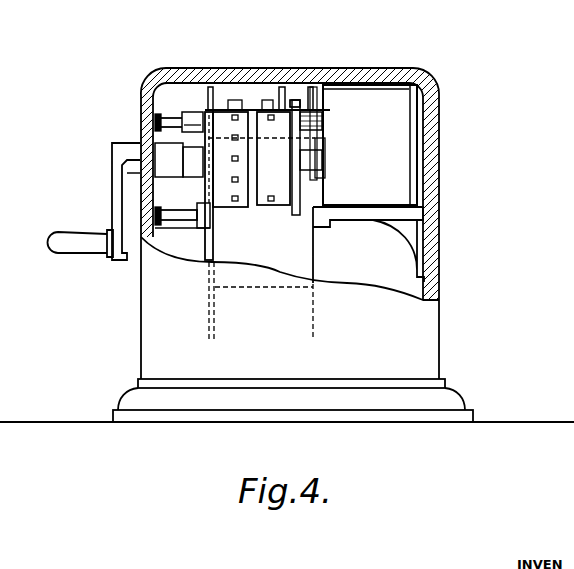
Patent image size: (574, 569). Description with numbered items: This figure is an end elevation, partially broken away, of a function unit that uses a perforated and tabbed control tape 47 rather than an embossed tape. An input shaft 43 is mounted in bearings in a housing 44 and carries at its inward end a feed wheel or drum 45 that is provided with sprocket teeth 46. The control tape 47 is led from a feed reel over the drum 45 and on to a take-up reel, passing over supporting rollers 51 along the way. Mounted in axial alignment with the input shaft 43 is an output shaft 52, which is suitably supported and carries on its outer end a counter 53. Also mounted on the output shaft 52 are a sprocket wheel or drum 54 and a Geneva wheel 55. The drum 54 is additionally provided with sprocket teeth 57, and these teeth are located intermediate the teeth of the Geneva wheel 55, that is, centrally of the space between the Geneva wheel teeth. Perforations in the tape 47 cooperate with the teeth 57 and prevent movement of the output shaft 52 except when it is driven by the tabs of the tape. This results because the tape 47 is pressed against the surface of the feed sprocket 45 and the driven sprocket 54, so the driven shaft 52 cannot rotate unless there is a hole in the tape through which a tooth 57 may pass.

The input shaft 43 is at (200, 162).
The housing 44 is at (438, 181).
The feed wheel or drum 45 is at (215, 187).
The sprocket teeth 46 is at (211, 112).
The control tape 47 is at (279, 87).
The supporting rollers 51 is at (313, 130).
The output shaft 52 is at (307, 163).
The counter 53 is at (395, 133).
The sprocket wheel or drum 54 is at (278, 187).
The Geneva wheel 55 is at (320, 208).
The sprocket teeth 57 is at (276, 117).